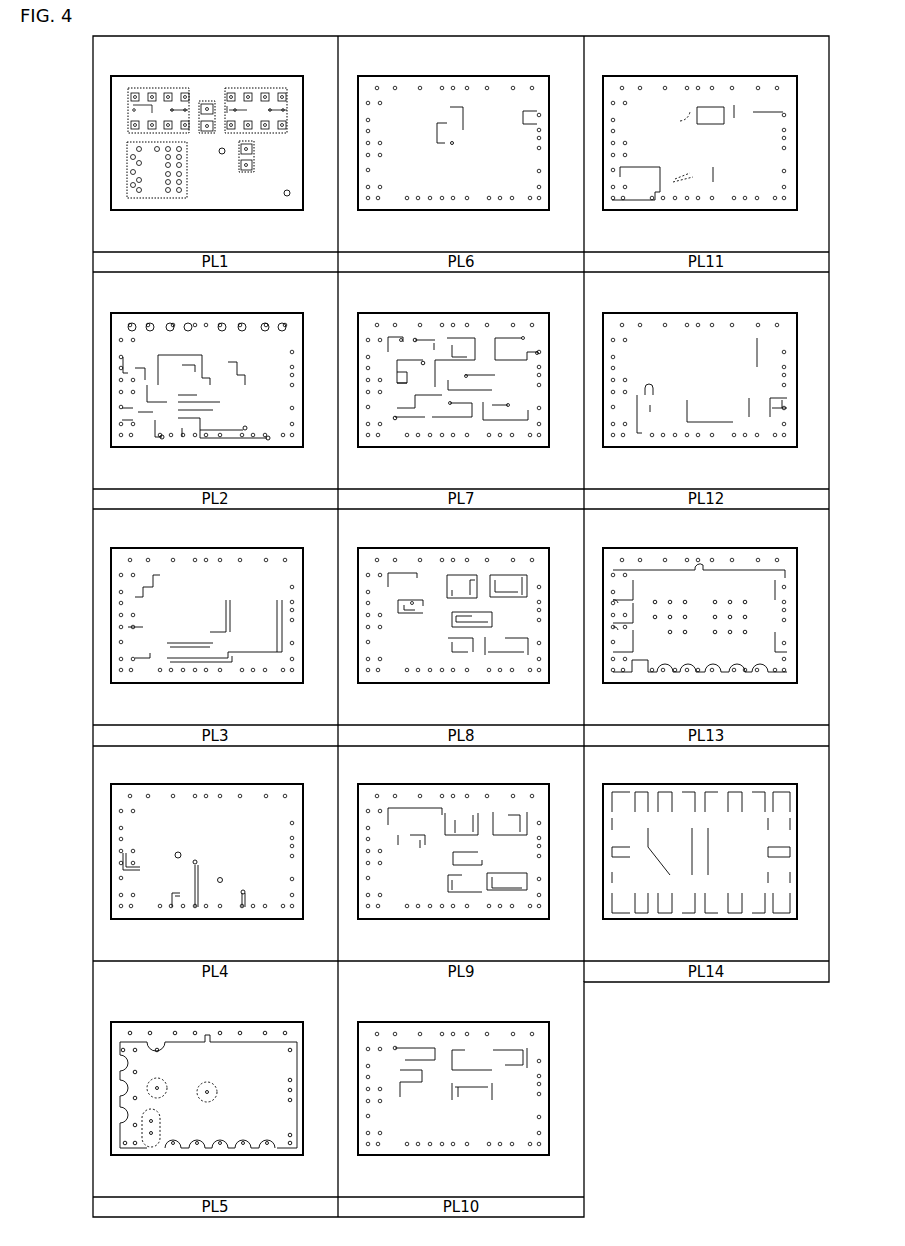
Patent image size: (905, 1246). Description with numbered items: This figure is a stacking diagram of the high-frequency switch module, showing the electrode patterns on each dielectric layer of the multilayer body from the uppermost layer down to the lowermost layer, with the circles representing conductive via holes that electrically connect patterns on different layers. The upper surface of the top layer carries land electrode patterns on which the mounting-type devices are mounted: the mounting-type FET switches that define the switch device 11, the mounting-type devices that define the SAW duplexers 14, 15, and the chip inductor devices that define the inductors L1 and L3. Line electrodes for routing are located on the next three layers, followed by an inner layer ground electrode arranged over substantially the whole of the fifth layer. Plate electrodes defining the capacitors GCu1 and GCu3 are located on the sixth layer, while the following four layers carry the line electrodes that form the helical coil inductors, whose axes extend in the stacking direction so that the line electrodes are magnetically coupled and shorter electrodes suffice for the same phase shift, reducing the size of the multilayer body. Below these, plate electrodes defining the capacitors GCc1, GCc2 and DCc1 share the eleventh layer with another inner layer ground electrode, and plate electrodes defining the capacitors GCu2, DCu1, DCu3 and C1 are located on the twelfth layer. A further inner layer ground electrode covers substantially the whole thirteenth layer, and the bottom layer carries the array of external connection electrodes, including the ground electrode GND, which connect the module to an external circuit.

The SAW duplexer 14 is at (152, 89).
The inductor L1 is at (208, 100).
The SAW duplexer 15 is at (254, 90).
The switch device 11 is at (148, 201).
The inductor L3 is at (247, 171).
The capacitor GCu1 is at (455, 108).
The capacitor GCu3 is at (529, 109).
The capacitor GCc1 is at (706, 108).
The capacitor GCc2 is at (746, 108).
The capacitor DCc1 is at (714, 183).
The capacitor GCu2 is at (740, 341).
The capacitor C1 is at (648, 421).
The capacitor DCu1 is at (693, 421).
The capacitor DCu3 is at (763, 421).
The external connection electrode GND is at (688, 829).